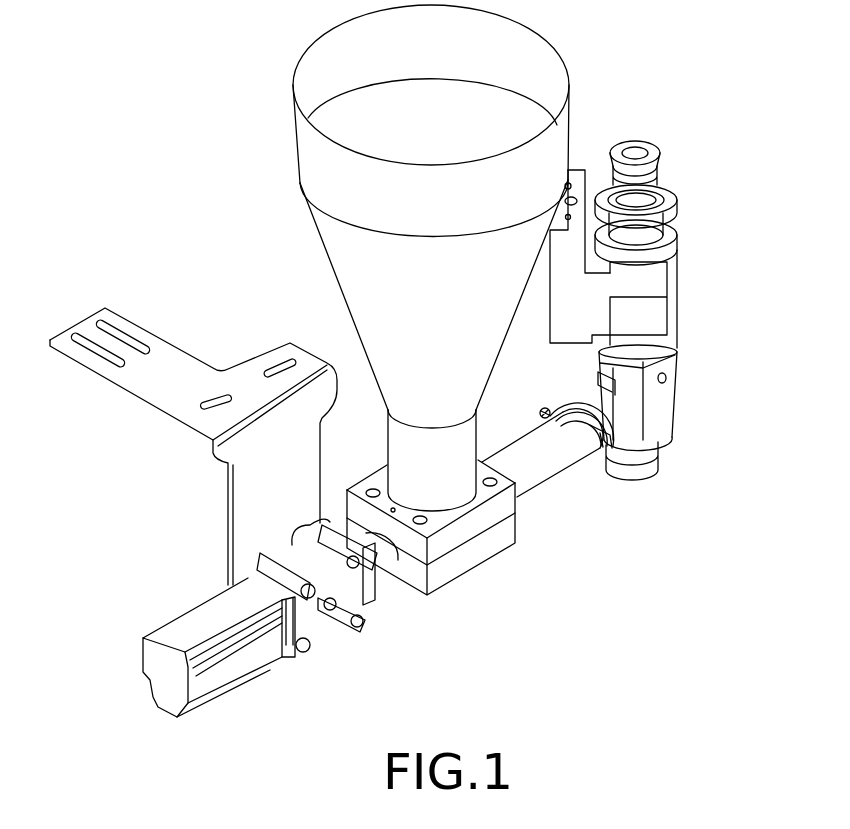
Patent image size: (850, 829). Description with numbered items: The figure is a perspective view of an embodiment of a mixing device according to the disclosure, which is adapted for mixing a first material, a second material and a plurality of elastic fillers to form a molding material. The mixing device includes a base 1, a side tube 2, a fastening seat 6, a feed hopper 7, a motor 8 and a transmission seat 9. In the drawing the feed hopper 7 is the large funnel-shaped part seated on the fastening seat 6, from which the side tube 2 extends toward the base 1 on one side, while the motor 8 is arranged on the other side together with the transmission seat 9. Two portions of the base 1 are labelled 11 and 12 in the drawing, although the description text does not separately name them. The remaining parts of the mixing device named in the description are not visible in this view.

The base 1 is at (691, 310).
The side tube 2 is at (549, 463).
The fastening seat 6 is at (473, 555).
The feed hopper 7 is at (298, 136).
The motor 8 is at (242, 658).
The transmission seat 9 is at (312, 613).
The pneumatic actuator 11 is at (672, 287).
The valve body 12 is at (690, 412).